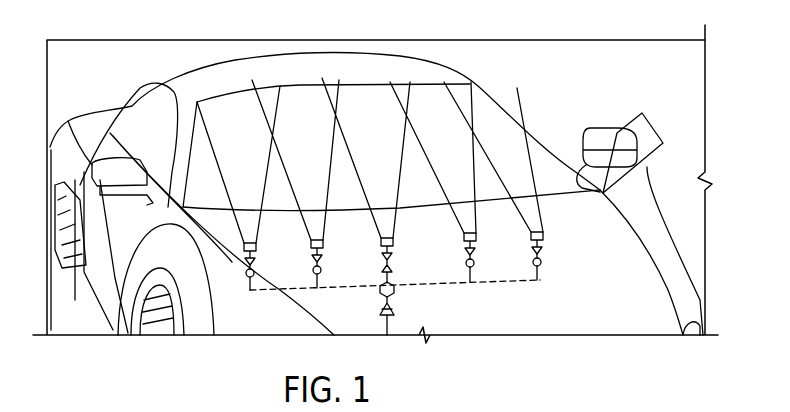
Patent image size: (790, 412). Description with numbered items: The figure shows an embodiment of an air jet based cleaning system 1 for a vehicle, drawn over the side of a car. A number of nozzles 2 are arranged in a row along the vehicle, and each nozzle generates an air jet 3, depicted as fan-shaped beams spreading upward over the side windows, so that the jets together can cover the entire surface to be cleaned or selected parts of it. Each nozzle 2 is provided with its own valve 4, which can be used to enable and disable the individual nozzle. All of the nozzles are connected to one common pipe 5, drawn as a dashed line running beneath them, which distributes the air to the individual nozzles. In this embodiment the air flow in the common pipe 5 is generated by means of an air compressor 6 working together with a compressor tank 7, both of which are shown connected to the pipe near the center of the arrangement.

The air jet based cleaning system 1 is at (556, 286).
The nozzle 2 is at (244, 250).
The air jet 3 is at (237, 113).
The valve 4 is at (247, 275).
The common pipe 5 is at (303, 291).
The air compressor 6 is at (385, 314).
The compressor tank 7 is at (396, 290).